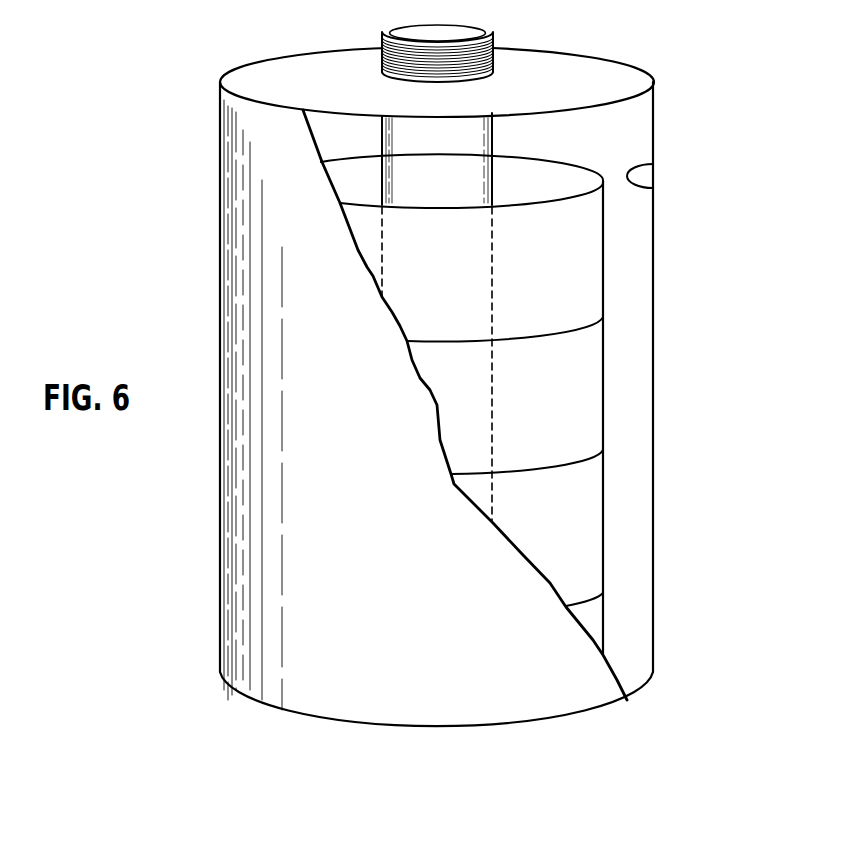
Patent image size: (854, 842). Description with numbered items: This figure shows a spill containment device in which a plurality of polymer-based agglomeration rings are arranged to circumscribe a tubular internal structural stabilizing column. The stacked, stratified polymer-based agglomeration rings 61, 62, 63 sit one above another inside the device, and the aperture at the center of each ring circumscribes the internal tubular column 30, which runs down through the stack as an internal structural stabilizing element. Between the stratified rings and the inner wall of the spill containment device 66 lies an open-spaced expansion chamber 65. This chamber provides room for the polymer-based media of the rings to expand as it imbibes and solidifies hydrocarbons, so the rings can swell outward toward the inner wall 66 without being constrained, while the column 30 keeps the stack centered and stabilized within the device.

The internal tubular column 30 is at (492, 138).
The polymer-based agglomeration ring 61 is at (603, 272).
The polymer-based agglomeration ring 62 is at (603, 400).
The polymer-based agglomeration ring 63 is at (603, 530).
The open-spaced expansion chamber 65 is at (628, 607).
The inner wall of the spill containment device 66 is at (646, 165).